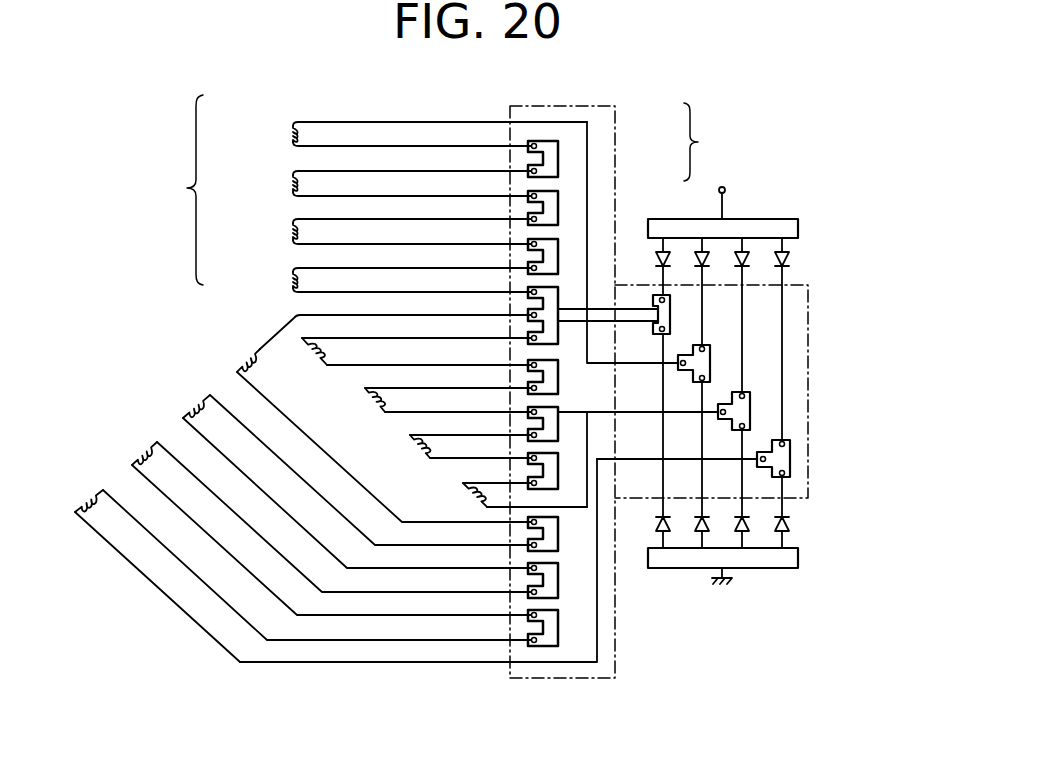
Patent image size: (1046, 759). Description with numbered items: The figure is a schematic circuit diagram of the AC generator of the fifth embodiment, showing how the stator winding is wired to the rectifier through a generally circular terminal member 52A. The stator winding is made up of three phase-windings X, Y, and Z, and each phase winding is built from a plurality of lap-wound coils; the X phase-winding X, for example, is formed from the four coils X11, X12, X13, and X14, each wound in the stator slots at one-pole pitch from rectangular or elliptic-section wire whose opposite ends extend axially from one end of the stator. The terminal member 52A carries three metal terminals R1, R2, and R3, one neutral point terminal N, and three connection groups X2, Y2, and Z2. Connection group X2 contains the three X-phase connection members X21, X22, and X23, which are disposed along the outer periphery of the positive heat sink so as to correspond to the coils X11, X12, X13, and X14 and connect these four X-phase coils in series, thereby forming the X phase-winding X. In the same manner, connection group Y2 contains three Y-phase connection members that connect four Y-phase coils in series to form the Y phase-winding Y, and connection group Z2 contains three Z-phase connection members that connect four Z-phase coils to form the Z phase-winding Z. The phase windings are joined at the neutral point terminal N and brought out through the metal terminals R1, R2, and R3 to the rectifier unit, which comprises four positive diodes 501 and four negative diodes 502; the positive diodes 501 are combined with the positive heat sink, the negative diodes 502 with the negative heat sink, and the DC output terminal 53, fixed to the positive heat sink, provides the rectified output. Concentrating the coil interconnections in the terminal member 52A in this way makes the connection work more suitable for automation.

The X-phase coil X11 is at (292, 134).
The X-phase coil X12 is at (292, 184).
The X-phase coil X13 is at (292, 232).
The X-phase coil X14 is at (292, 281).
The X phase-winding X is at (185, 190).
The X-phase connection member X21 is at (552, 147).
The X-phase connection member X22 is at (552, 194).
The X-phase connection member X23 is at (552, 241).
The connection group X2 is at (709, 142).
The neutral point terminal N is at (552, 298).
The connection group Z2 is at (563, 357).
The connection group Y2 is at (567, 513).
The Z phase-winding Z is at (296, 337).
The Y phase-winding Y is at (238, 335).
The terminal member 52A is at (577, 105).
The DC output terminal 53 is at (724, 190).
The positive diodes 501 is at (787, 263).
The negative diodes 502 is at (786, 524).
The metal terminal R1 is at (710, 360).
The metal terminal R2 is at (750, 408).
The metal terminal R3 is at (790, 456).